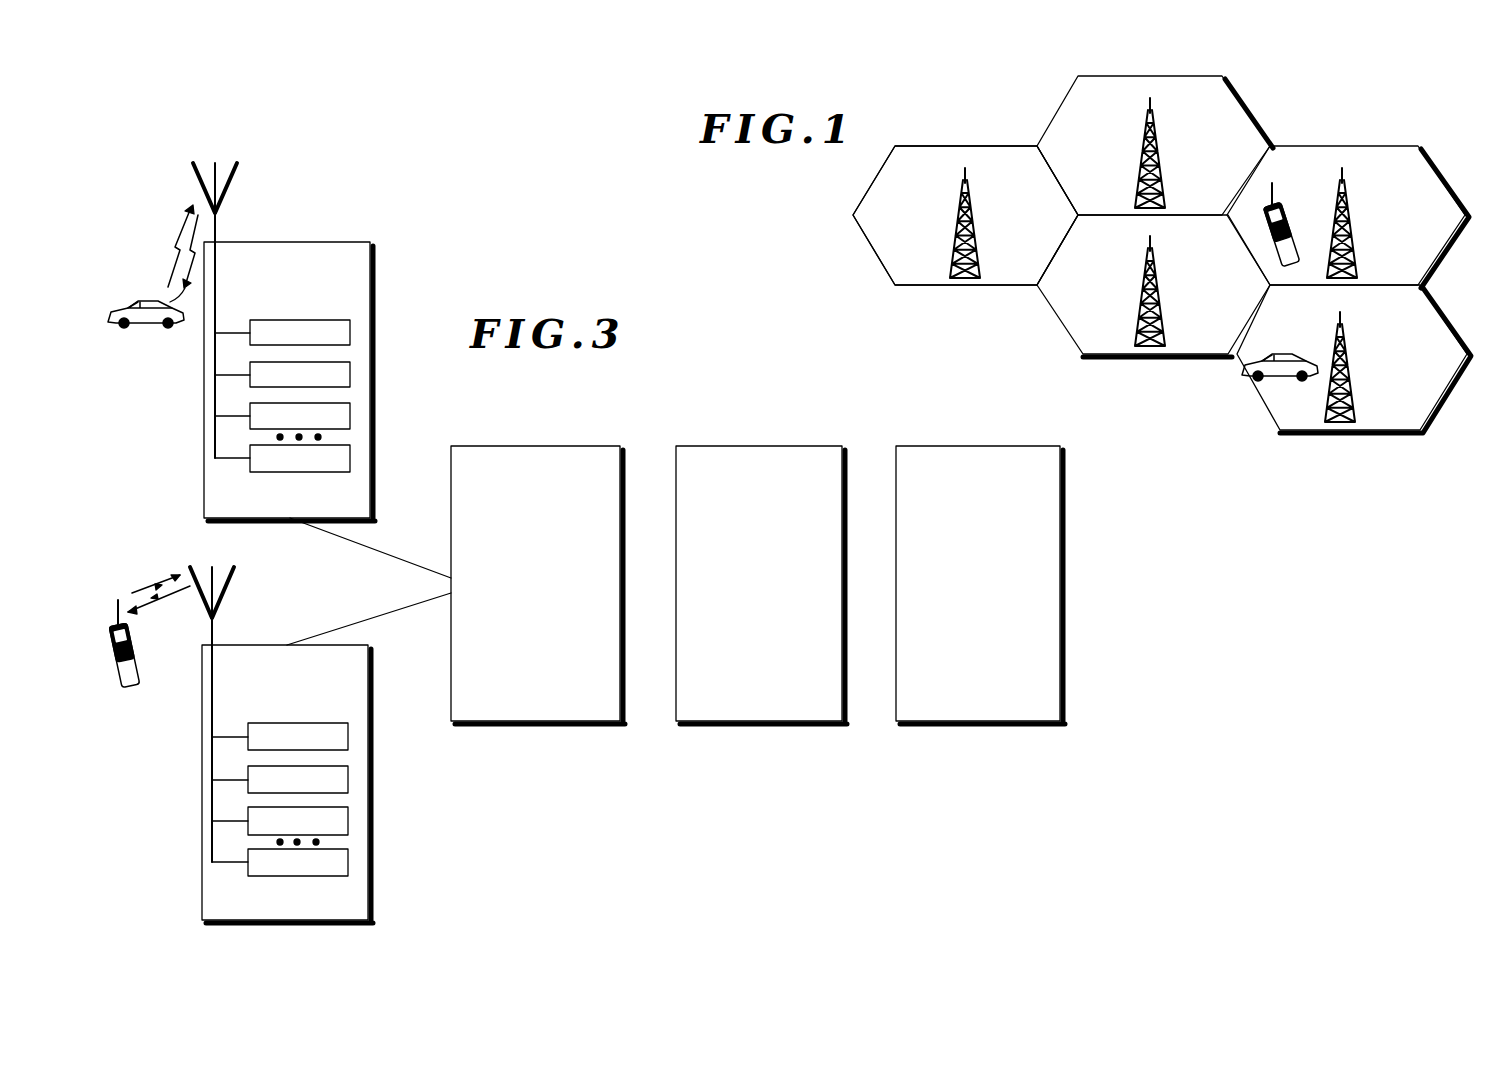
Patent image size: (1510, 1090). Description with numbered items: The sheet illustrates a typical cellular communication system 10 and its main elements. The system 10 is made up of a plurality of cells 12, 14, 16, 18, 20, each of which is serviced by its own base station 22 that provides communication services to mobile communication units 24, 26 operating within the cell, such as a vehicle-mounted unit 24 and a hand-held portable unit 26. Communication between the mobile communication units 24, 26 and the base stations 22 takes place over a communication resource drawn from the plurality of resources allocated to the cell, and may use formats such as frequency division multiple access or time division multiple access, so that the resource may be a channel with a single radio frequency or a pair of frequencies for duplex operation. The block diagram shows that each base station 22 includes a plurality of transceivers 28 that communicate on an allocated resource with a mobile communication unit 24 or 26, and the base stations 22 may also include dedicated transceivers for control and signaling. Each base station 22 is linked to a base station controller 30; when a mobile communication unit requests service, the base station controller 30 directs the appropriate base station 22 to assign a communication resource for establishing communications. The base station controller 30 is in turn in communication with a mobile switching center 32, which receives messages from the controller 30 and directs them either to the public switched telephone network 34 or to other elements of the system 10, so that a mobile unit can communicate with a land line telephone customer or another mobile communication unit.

In FIG. 1, the cellular communication system 10 is at (1408, 100).
In FIG. 1, the cell 12 is at (1120, 358).
In FIG. 1, the cell 14 is at (935, 146).
In FIG. 1, the cell 16 is at (1150, 76).
In FIG. 1, the cell 18 is at (1338, 146).
In FIG. 1, the cell 20 is at (1455, 402).
In FIG. 1, the base station 22 is at (968, 207).
In FIG. 3, the base station 22 is at (375, 285).
In FIG. 1, the mobile communication unit 24 is at (1276, 356).
In FIG. 3, the mobile communication unit 24 is at (143, 330).
In FIG. 1, the mobile communication unit 26 is at (1280, 192).
In FIG. 3, the mobile communication unit 26 is at (126, 692).
In FIG. 3, the transceiver 28 is at (350, 333).
In FIG. 3, the base station controller 30 is at (536, 446).
In FIG. 3, the mobile switching center 32 is at (760, 446).
In FIG. 3, the public switched telephone network 34 is at (975, 446).